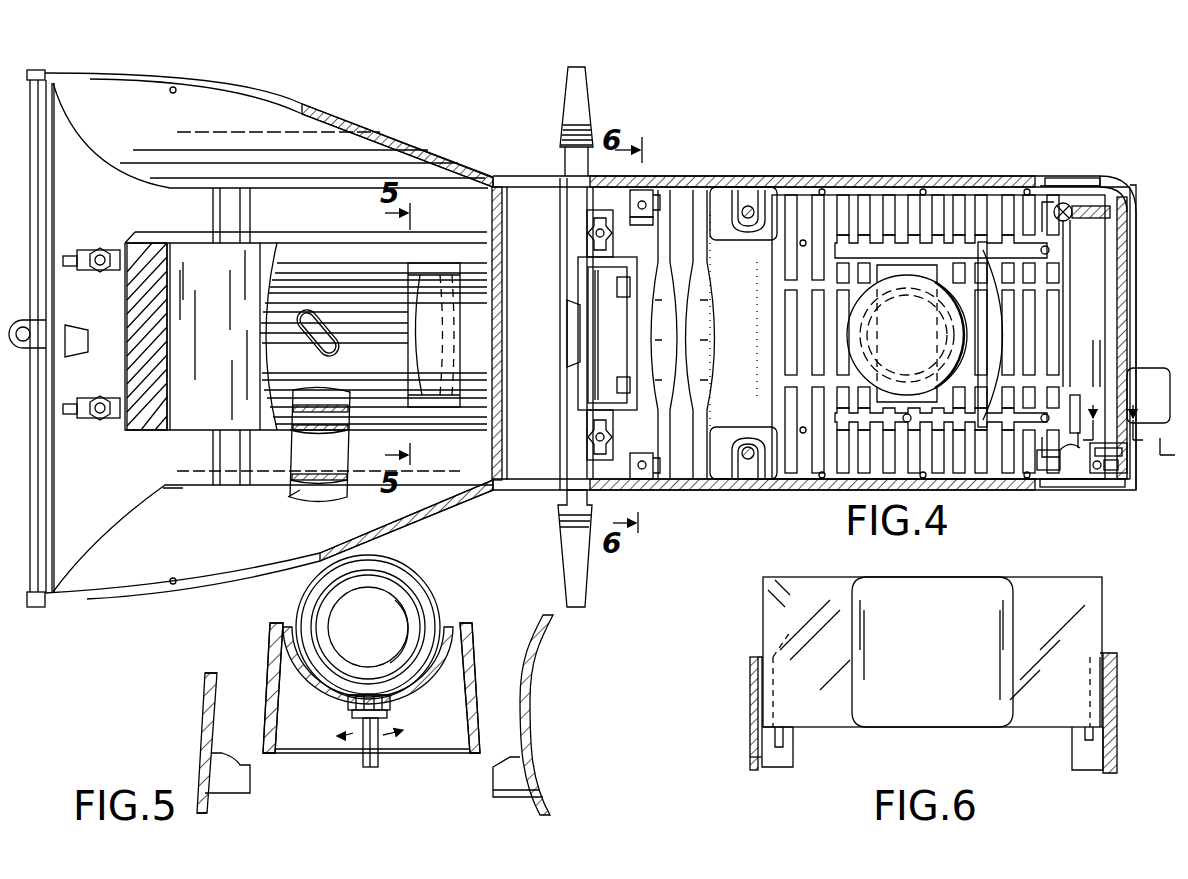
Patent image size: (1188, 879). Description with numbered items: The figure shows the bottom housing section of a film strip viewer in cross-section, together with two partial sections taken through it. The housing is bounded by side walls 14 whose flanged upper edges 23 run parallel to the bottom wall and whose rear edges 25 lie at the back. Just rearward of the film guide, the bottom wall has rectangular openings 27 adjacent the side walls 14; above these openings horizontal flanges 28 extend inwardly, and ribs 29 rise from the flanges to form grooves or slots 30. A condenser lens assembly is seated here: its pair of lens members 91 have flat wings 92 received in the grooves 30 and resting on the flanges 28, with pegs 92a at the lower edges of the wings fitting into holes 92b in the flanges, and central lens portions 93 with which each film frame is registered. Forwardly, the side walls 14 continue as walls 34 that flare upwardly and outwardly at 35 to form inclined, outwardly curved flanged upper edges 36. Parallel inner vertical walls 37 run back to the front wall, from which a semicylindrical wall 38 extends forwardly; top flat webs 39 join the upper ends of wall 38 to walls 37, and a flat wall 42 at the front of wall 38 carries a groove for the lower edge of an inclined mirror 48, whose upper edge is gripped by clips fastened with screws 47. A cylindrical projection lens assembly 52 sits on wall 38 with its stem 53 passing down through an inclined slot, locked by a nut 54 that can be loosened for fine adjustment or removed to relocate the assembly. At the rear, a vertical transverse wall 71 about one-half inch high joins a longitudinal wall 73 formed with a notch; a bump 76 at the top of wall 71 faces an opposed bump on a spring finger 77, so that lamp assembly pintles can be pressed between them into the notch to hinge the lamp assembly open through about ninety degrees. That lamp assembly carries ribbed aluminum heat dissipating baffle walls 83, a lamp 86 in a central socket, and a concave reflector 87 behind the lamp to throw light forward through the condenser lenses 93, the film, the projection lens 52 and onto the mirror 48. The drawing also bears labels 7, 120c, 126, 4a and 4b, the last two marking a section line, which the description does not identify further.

In FIG. 4, the spotlight assembly 7 is at (207, 78).
In FIG. 4, the side walls 14 is at (825, 173).
In FIG. 6, the side walls 14 is at (752, 690).
In FIG. 4, the upper edges 23 is at (1050, 178).
In FIG. 6, the upper edges 23 is at (757, 657).
In FIG. 4, the rear edges 25 is at (1135, 185).
In FIG. 4, the rectangular openings 27 is at (642, 222).
In FIG. 4, the horizontal flanges 28 is at (640, 190).
In FIG. 6, the horizontal flanges 28 is at (792, 730).
In FIG. 4, the ribs 29 is at (665, 225).
In FIG. 6, the ribs 29 is at (931, 673).
In FIG. 4, the grooves or slots 30 is at (722, 200).
In FIG. 4, the forward side wall extensions 34 is at (305, 495).
In FIG. 5, the forward side wall extensions 34 is at (540, 715).
In FIG. 4, the flared wall portions 35 is at (200, 70).
In FIG. 5, the flared wall portions 35 is at (545, 640).
In FIG. 4, the flanged upper edges 36 is at (218, 80).
In FIG. 4, the inner vertical walls 37 is at (319, 457).
In FIG. 5, the inner vertical walls 37 is at (268, 712).
In FIG. 4, the semicylindrical wall 38 is at (335, 395).
In FIG. 5, the semicylindrical wall 38 is at (423, 685).
In FIG. 5, the top flat webs 39 is at (440, 630).
In FIG. 4, the flat wall 42 is at (228, 347).
In FIG. 4, the screws 47 is at (101, 255).
In FIG. 4, the mirror 48 is at (135, 292).
In FIG. 4, the projection lens assembly 52 is at (405, 318).
In FIG. 5, the projection lens assembly 52 is at (447, 560).
In FIG. 5, the stem 53 is at (377, 735).
In FIG. 5, the nut 54 is at (353, 710).
In FIG. 4, the vertical transverse wall 71 is at (1128, 466).
In FIG. 4, the notched wall 73 is at (1120, 405).
In FIG. 4, the bump 76 is at (1112, 470).
In FIG. 6, the spring finger 77 is at (1078, 543).
In FIG. 4, the heat dissipating baffle walls 83 is at (960, 240).
In FIG. 4, the lamp 86 is at (907, 333).
In FIG. 4, the concave reflector 87 is at (1000, 316).
In FIG. 4, the lens members 91 is at (715, 254).
In FIG. 6, the lens members 91 is at (1080, 575).
In FIG. 4, the flat wings 92 is at (720, 491).
In FIG. 6, the flat wings 92 is at (765, 597).
In FIG. 6, the pegs 92a is at (770, 768).
In FIG. 6, the holes 92b is at (752, 757).
In FIG. 4, the central lens portions 93 is at (700, 300).
In FIG. 6, the central lens portions 93 is at (947, 712).
In FIG. 4, the bracket 120c is at (596, 232).
In FIG. 4, the fastener 126 is at (750, 205).
In FIG. 4, the section line 4a is at (1119, 415).
In FIG. 4, the section line 4b is at (1123, 436).